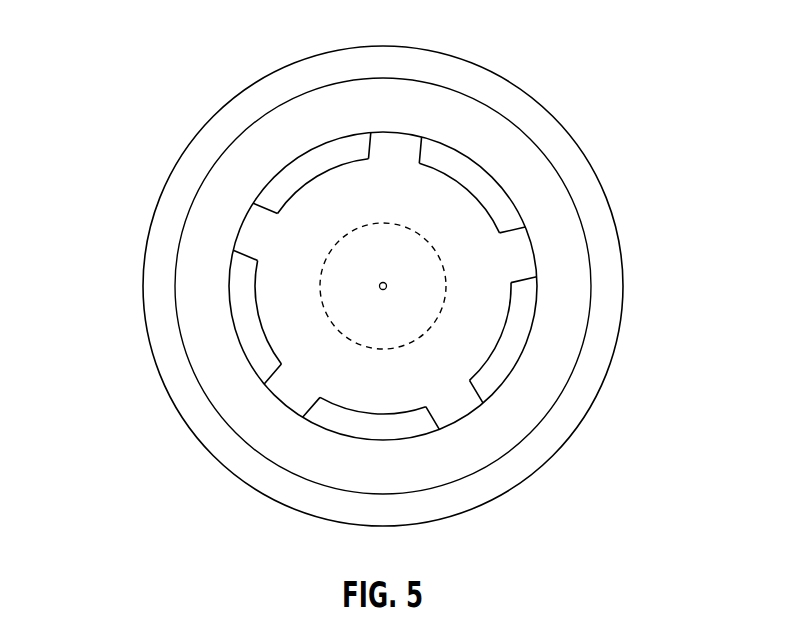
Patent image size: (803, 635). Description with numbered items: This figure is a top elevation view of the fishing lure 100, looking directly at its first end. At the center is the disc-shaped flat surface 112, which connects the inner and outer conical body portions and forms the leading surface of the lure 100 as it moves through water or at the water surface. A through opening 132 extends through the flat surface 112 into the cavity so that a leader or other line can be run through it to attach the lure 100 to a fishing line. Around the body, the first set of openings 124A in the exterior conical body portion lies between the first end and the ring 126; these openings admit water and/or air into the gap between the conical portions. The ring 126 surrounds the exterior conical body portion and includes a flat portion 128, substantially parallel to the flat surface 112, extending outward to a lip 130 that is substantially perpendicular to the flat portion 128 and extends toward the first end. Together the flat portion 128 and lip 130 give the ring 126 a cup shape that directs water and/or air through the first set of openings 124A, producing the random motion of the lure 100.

The fishing lure 100 is at (126, 39).
The flat surface 112 is at (313, 241).
The first set of openings 124A is at (293, 178).
The ring 126 is at (601, 161).
The flat portion 128 is at (557, 323).
The lip 130 is at (607, 273).
The through opening 132 is at (388, 285).